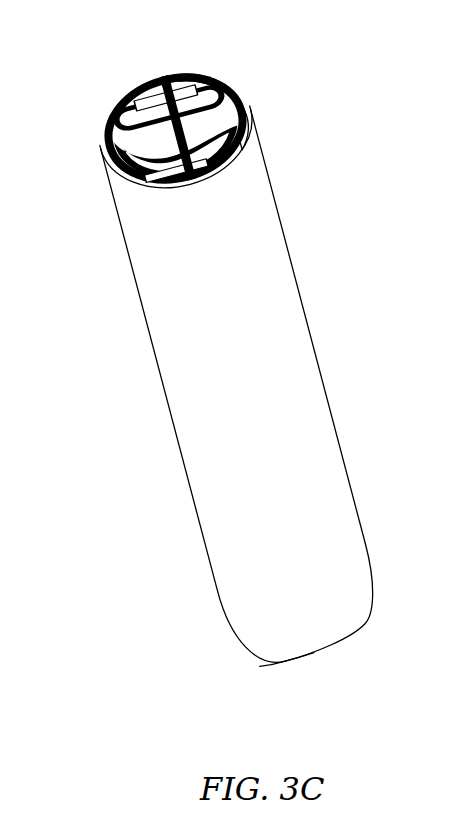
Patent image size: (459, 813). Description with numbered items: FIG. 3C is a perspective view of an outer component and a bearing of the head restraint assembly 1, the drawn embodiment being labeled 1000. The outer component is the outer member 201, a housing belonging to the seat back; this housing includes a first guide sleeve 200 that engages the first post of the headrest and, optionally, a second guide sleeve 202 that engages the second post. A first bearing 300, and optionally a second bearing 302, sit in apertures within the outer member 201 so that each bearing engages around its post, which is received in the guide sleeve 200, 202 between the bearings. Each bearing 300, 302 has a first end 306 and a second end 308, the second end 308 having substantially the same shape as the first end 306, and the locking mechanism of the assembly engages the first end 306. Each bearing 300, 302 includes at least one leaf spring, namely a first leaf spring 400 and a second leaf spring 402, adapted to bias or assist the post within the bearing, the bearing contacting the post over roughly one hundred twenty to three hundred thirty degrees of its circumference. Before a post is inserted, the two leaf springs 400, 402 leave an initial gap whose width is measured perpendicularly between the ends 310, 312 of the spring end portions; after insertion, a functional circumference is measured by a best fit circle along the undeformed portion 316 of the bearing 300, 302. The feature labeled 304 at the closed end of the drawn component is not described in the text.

The cartridge assembly 1000 is at (350, 34).
The head restraint assembly 1 is at (348, 160).
The first guide sleeve 200 is at (229, 437).
The second guide sleeve 202 is at (248, 670).
The outer member 201 is at (204, 79).
The first bearing 300 is at (291, 96).
The second bearing 302 is at (233, 96).
The closed end of housing 304 is at (367, 625).
The first end 306 is at (115, 77).
The second end 308 is at (322, 672).
The end 310 is at (166, 74).
The end 312 is at (172, 78).
The undeformed portion 316 is at (318, 362).
The first leaf spring 400 is at (115, 121).
The second leaf spring 402 is at (114, 143).